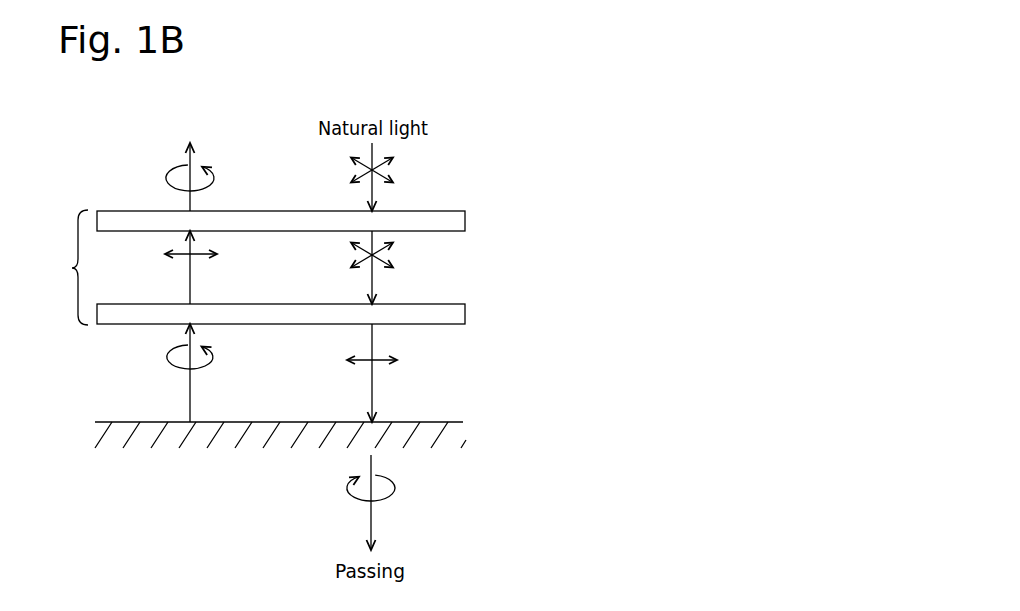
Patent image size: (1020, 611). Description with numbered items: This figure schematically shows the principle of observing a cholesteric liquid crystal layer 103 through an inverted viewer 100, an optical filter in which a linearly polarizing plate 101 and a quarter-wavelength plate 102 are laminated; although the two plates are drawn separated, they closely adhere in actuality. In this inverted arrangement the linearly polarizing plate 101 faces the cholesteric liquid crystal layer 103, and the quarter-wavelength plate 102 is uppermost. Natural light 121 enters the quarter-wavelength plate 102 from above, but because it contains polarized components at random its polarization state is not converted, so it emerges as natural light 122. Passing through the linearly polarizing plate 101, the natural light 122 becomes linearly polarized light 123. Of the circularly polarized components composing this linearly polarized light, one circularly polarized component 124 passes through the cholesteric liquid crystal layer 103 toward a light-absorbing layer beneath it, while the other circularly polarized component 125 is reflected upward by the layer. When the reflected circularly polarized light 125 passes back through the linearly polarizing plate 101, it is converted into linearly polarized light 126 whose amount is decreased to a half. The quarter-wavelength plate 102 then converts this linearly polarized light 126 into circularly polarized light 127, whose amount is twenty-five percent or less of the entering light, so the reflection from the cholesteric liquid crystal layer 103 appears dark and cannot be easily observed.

The viewer 100 is at (57, 267).
The linearly polarizing plate 101 is at (466, 313).
The quarter-wavelength plate 102 is at (466, 222).
The cholesteric liquid crystal layer 103 is at (452, 421).
The natural light 121 is at (372, 193).
The natural light 122 is at (372, 278).
The linearly polarized light 123 is at (372, 389).
The circularly polarized component 124 is at (371, 526).
The circularly polarized component 125 is at (190, 390).
The linearly polarized light 126 is at (190, 283).
The circularly polarized light 127 is at (190, 200).